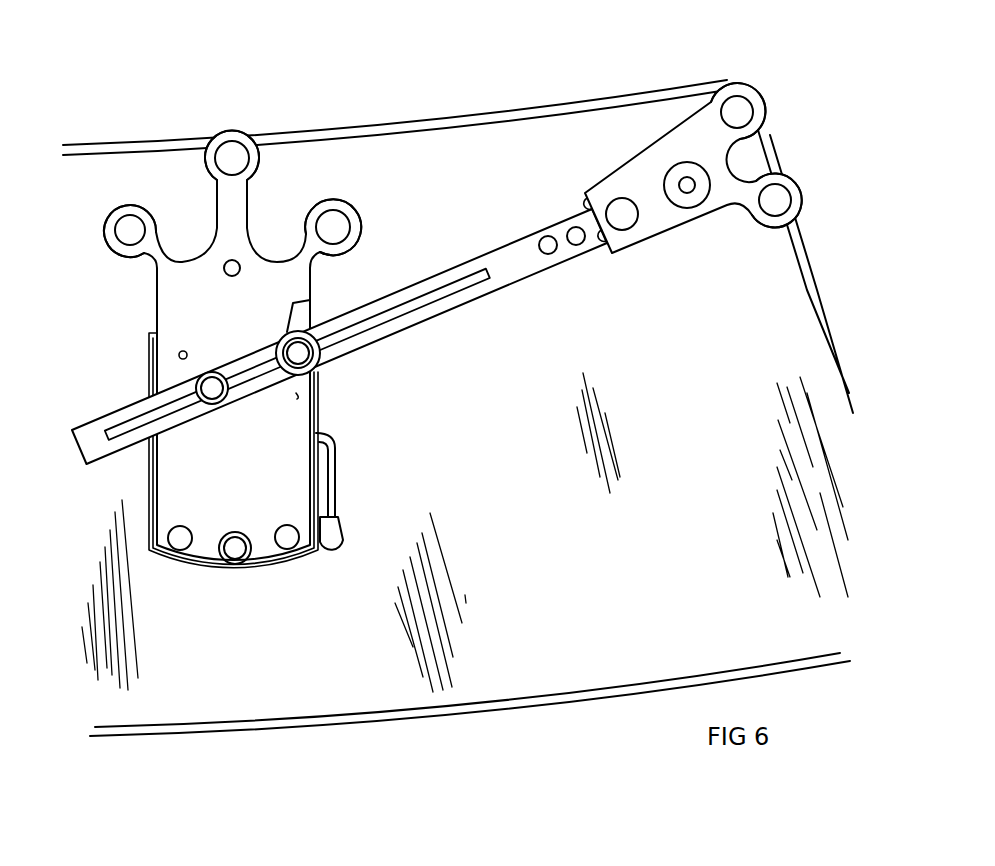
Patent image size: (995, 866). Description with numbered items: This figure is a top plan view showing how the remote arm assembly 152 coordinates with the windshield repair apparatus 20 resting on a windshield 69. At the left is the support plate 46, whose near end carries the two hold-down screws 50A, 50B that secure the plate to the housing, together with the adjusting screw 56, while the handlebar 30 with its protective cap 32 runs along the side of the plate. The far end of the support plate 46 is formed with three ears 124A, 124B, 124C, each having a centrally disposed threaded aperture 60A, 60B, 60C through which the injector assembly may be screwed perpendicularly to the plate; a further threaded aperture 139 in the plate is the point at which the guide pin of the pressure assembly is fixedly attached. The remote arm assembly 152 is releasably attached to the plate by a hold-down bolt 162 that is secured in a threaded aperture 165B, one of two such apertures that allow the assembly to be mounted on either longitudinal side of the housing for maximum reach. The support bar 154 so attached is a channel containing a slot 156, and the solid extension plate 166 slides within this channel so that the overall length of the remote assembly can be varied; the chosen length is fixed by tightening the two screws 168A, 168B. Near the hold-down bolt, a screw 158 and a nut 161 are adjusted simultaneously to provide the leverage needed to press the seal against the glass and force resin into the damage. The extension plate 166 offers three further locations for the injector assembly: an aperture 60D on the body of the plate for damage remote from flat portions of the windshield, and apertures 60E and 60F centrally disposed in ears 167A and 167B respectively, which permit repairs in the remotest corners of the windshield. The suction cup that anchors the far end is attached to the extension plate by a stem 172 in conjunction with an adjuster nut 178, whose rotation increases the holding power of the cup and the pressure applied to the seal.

The windshield repair apparatus 20 is at (136, 353).
The handlebar 30 is at (333, 468).
The protective cap 32 is at (342, 535).
The support plate 46 is at (300, 396).
The hold-down screw 50A is at (292, 552).
The hold-down screw 50B is at (180, 550).
The adjusting screw 56 is at (233, 567).
The threaded aperture 60A is at (353, 225).
The threaded aperture 60B is at (245, 165).
The threaded aperture 60C is at (115, 223).
The aperture 60D is at (622, 232).
The aperture 60E is at (773, 222).
The aperture 60F is at (750, 110).
The windshield 69 is at (612, 542).
The ear 124A is at (357, 207).
The ear 124B is at (243, 130).
The ear 124C is at (112, 207).
The threaded aperture 139 is at (228, 260).
The remote arm assembly 152 is at (670, 403).
The support bar 154 is at (453, 308).
The slot 156 is at (377, 318).
The screw 158 is at (207, 373).
The nut 161 is at (295, 302).
The hold-down bolt 162 is at (313, 363).
The threaded aperture 165B is at (182, 357).
The extension plate 166 is at (600, 192).
The ear 167A is at (773, 213).
The ear 167B is at (755, 88).
The screw 168A is at (552, 253).
The screw 168B is at (580, 246).
The stem 172 is at (688, 192).
The adjuster nut 178 is at (683, 208).